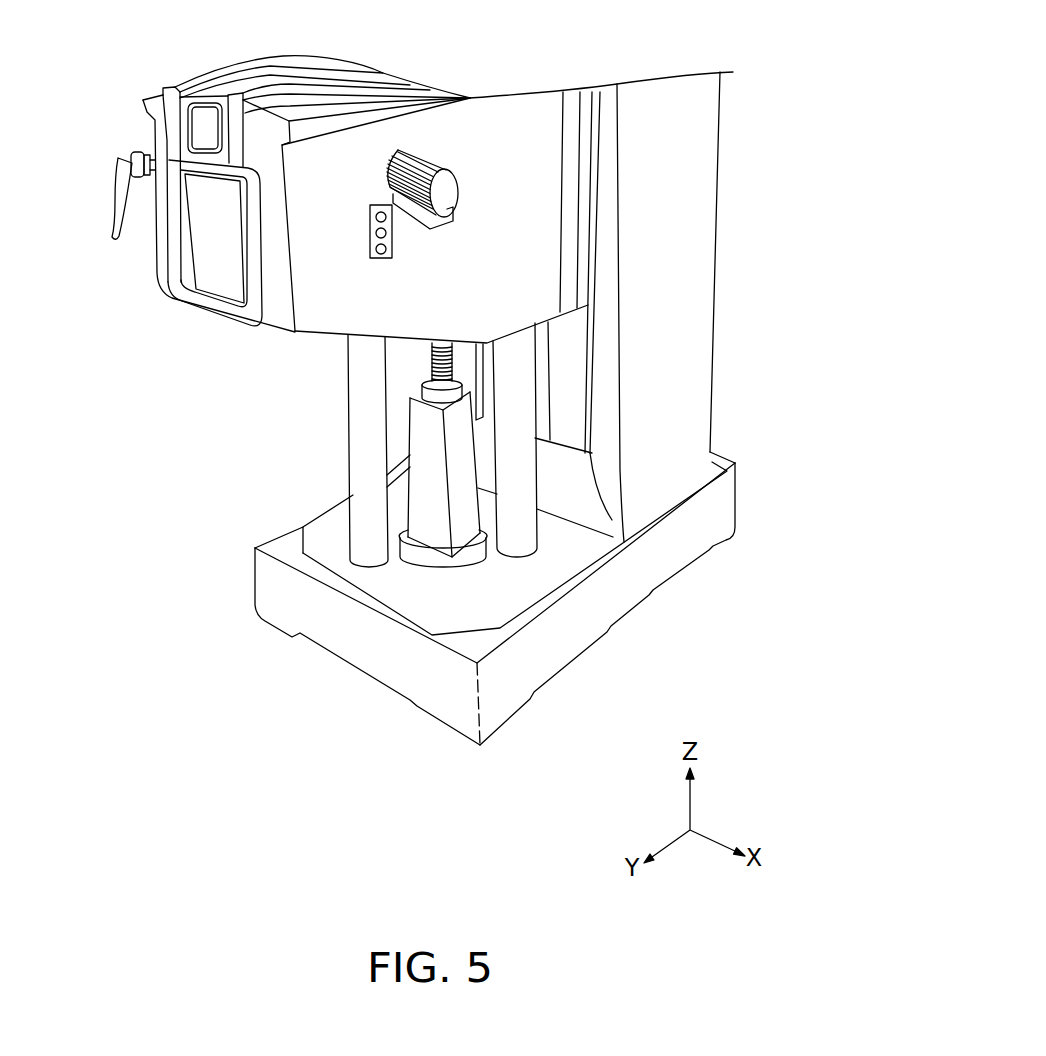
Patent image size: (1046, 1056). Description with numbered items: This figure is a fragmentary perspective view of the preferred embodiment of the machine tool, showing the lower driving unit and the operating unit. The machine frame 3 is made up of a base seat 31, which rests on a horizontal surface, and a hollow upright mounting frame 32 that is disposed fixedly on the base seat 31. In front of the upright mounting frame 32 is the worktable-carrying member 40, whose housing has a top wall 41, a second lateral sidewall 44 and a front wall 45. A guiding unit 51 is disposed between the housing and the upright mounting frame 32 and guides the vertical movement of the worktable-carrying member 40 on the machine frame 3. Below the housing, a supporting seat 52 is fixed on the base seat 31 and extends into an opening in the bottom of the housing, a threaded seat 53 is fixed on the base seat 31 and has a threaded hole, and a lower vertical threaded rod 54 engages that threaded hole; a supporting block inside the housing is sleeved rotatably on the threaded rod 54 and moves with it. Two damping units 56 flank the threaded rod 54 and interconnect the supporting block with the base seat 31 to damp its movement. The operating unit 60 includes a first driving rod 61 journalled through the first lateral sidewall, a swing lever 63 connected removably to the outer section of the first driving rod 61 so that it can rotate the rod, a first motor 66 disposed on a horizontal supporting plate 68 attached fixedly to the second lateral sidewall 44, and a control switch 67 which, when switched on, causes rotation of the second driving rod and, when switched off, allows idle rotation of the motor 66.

The machine frame 3 is at (735, 281).
The base seat 31 is at (670, 572).
The hollow upright mounting frame 32 is at (703, 330).
The worktable-carrying member 40 is at (290, 348).
The top wall 41 is at (147, 105).
The second lateral sidewall 44 is at (333, 330).
The front wall 45 is at (170, 273).
The guiding unit 51 is at (583, 237).
The supporting seat 52 is at (413, 452).
The threaded seat 53 is at (420, 395).
The lower vertical threaded rod 54 is at (428, 360).
The damping units 56 is at (358, 487).
The operating unit 60 is at (106, 191).
The first driving rod 61 is at (148, 137).
The swing lever 63 is at (108, 223).
The first motor 66 is at (433, 150).
The control switch 67 is at (378, 205).
The horizontal supporting plate 68 is at (453, 220).